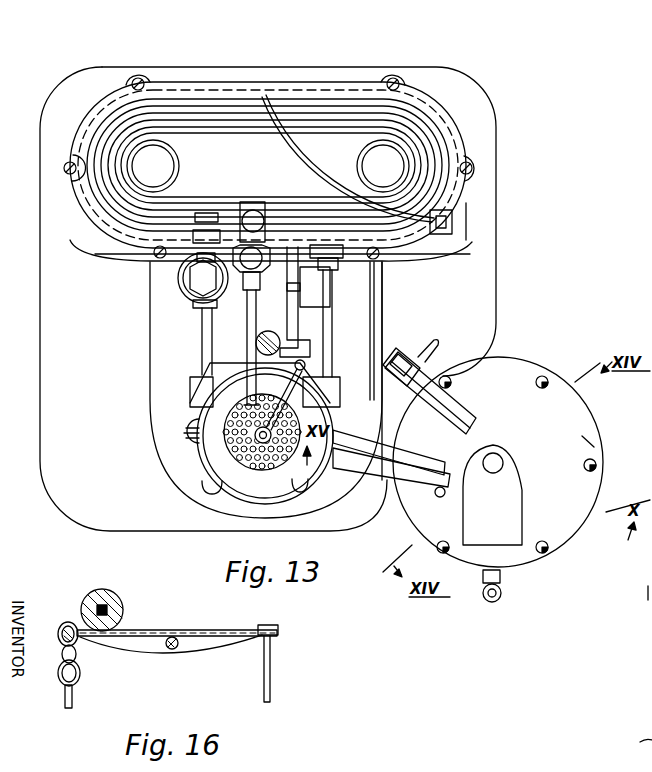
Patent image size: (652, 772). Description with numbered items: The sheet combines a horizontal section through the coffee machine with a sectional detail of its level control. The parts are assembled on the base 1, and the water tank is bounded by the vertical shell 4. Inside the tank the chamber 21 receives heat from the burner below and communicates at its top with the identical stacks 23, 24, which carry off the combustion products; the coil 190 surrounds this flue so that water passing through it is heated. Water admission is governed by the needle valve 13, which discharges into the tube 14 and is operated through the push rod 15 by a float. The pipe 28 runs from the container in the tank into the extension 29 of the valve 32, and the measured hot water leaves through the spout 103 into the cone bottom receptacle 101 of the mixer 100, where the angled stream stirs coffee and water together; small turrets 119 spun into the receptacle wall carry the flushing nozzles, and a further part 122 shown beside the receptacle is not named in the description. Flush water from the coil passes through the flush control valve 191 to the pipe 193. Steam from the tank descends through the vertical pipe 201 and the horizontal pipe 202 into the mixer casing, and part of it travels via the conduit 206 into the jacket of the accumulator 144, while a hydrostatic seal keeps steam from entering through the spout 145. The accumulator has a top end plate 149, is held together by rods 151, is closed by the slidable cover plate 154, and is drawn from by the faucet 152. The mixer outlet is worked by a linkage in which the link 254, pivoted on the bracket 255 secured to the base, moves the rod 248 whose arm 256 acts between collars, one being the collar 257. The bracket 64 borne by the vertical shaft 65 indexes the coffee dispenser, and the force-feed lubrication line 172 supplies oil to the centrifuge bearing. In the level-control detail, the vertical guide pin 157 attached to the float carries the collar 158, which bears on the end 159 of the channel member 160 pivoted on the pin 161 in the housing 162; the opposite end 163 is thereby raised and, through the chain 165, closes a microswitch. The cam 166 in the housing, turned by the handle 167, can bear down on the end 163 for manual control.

In FIG. 13, the base 1 is at (462, 93).
In FIG. 13, the vertical shell 4 is at (443, 137).
In FIG. 13, the chamber 21 is at (268, 165).
In FIG. 13, the coil 190 is at (362, 118).
In FIG. 13, the stack 23 is at (178, 156).
In FIG. 13, the stack 24 is at (407, 156).
In FIG. 13, the tube 14 is at (293, 147).
In FIG. 13, the needle valve 13 is at (452, 225).
In FIG. 13, the push rod 15 is at (468, 219).
In FIG. 13, the extension 29 is at (254, 203).
In FIG. 13, the pipe 28 is at (263, 211).
In FIG. 13, the valve 32 is at (259, 259).
In FIG. 13, the spout 103 is at (247, 340).
In FIG. 13, the flush control valve 191 is at (190, 300).
In FIG. 13, the pipe 193 is at (200, 350).
In FIG. 13, the vertical shaft 65 is at (278, 326).
In FIG. 13, the bracket 64 is at (279, 345).
In FIG. 13, the bracket 255 is at (331, 299).
In FIG. 13, the link 254 is at (335, 318).
In FIG. 13, the horizontal pipe 202 is at (335, 347).
In FIG. 13, the vertical pipe 201 is at (386, 268).
In FIG. 13, the mixer 100 is at (197, 412).
In FIG. 13, the arm 256 is at (300, 392).
In FIG. 13, the filter ring 122 is at (230, 443).
In FIG. 13, the cone bottom receptacle 101 is at (307, 420).
In FIG. 13, the rod 248 is at (306, 366).
In FIG. 13, the collar 257 is at (253, 430).
In FIG. 13, the force-feed lubrication line 172 is at (182, 440).
In FIG. 13, the turrets 119 is at (293, 484).
In FIG. 13, the conduit 206 is at (422, 438).
In FIG. 13, the spout 145 is at (430, 481).
In FIG. 13, the housing 162 is at (470, 410).
In FIG. 13, the cam 166 is at (393, 362).
In FIG. 16, the cam 166 is at (123, 602).
In FIG. 13, the handle 167 is at (435, 346).
In FIG. 13, the accumulator 144 is at (591, 420).
In FIG. 13, the top end plate 149 is at (590, 443).
In FIG. 13, the rods 151 is at (598, 472).
In FIG. 13, the cover plate 154 is at (522, 510).
In FIG. 13, the faucet 152 is at (503, 575).
In FIG. 16, the end 159 is at (233, 630).
In FIG. 16, the channel member 160 is at (163, 655).
In FIG. 16, the pin 161 is at (178, 638).
In FIG. 16, the end 163 is at (78, 624).
In FIG. 16, the chain 165 is at (58, 673).
In FIG. 16, the collar 158 is at (278, 627).
In FIG. 16, the vertical guide pin 157 is at (273, 668).